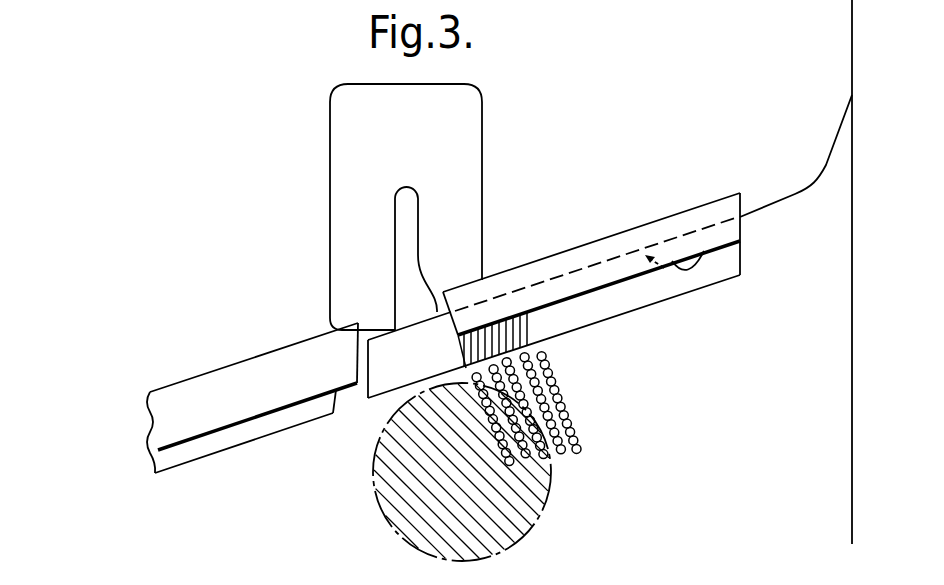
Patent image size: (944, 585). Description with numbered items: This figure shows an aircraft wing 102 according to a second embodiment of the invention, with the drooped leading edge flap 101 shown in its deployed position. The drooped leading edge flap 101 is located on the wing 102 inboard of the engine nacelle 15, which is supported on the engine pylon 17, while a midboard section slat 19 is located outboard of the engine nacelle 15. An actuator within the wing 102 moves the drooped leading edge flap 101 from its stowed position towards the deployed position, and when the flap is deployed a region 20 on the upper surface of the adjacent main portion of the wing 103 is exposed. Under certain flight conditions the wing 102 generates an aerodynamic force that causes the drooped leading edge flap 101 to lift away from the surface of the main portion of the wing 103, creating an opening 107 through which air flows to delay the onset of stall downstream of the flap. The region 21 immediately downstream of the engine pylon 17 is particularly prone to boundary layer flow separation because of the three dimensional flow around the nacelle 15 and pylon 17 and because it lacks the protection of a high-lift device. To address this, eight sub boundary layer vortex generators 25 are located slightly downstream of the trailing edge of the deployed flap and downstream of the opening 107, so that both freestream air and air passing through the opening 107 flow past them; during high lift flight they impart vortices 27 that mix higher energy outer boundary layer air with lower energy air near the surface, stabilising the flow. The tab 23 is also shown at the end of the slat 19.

The engine nacelle 15 is at (348, 164).
The engine pylon 17 is at (405, 237).
The midboard section slat 19 is at (185, 398).
The region on the upper surface of the main wing portion 20 is at (643, 293).
The region downstream of the engine pylon 21 is at (533, 523).
The plate end tab 23 is at (340, 328).
The sub boundary layer vortex generators 25 is at (542, 324).
The vortices 27 is at (578, 443).
The drooped leading edge flap 101 is at (571, 264).
The wing 102 is at (217, 490).
The main portion of the wing 103 is at (752, 340).
The opening 107 is at (703, 257).